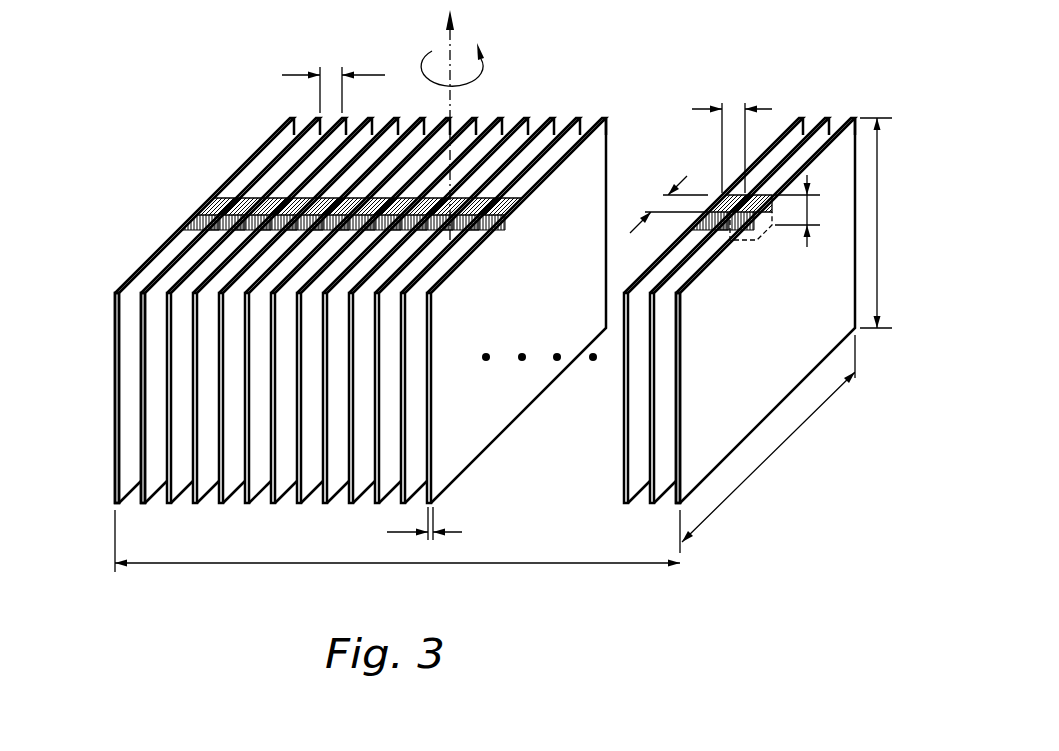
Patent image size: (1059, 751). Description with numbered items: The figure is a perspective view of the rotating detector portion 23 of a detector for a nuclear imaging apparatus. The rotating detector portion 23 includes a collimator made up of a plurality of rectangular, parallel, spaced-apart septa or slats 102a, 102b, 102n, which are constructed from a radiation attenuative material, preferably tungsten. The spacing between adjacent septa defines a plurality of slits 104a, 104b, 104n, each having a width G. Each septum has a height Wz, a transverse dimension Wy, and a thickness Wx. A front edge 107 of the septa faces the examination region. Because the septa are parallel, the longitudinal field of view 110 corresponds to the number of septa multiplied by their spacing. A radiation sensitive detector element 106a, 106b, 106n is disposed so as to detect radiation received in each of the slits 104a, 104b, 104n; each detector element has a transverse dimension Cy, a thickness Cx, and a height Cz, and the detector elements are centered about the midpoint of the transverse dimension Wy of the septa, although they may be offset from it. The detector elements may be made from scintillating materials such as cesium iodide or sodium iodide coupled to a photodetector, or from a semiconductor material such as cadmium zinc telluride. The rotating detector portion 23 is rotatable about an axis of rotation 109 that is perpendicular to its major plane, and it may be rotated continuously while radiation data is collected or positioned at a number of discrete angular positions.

The rotating detector portion 23 is at (870, 98).
The septum 102a is at (115, 308).
The septum 102b is at (141, 366).
The septum 102n is at (775, 352).
The slit 104a is at (139, 493).
The slit 104b is at (165, 493).
The slit 104n is at (676, 500).
The radiation sensitive detector element 106a is at (208, 206).
The radiation sensitive detector element 106b is at (262, 222).
The radiation sensitive detector element 106n is at (753, 192).
The front edge 107 is at (500, 456).
The axis of rotation 109 is at (452, 97).
The longitudinal field of view 110 is at (517, 565).
The slit width G is at (330, 75).
The septum thickness Wx is at (443, 528).
The septum transverse dimension Wy is at (787, 440).
The septum height Wz is at (877, 227).
The detector element thickness Cx is at (732, 109).
The detector element transverse dimension Cy is at (660, 203).
The detector element height Cz is at (807, 208).